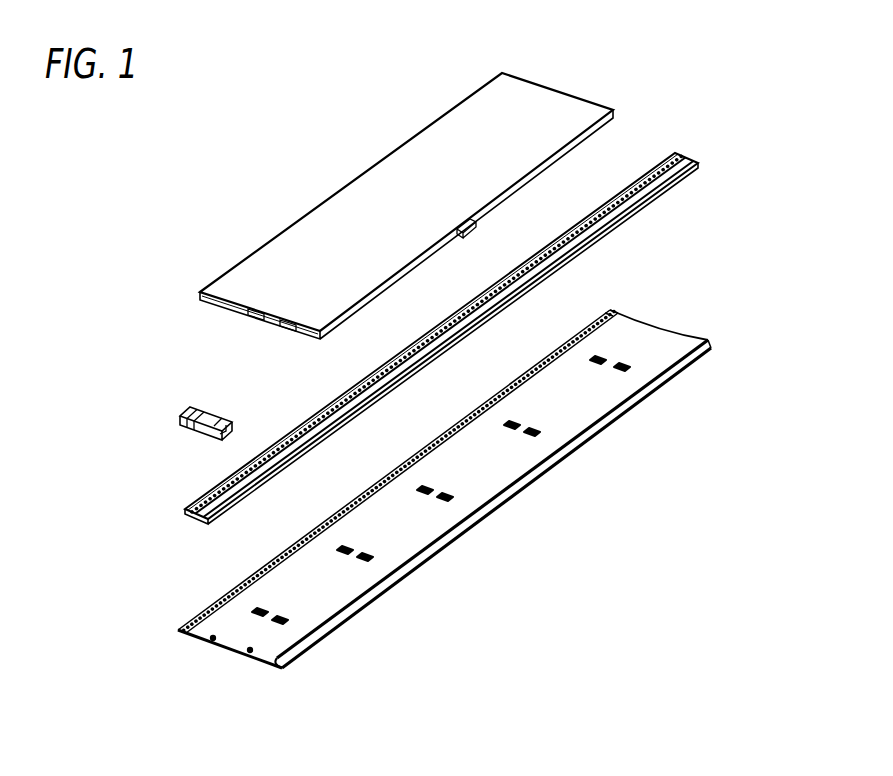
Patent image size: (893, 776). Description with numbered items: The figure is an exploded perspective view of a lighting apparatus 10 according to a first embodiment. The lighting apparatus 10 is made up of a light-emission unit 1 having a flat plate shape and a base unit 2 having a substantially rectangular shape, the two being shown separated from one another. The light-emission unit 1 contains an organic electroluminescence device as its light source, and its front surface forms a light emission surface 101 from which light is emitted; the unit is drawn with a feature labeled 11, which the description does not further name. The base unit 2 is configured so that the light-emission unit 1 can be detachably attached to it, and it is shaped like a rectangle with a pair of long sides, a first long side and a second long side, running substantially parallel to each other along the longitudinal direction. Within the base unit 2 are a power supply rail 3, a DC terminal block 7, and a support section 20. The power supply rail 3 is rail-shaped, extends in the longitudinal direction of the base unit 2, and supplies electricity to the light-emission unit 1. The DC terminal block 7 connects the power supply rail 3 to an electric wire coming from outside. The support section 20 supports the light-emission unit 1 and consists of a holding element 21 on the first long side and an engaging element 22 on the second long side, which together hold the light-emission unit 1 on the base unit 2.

The lighting apparatus 10 is at (668, 103).
The light-emission unit 1 is at (406, 206).
The light emission surface 101 is at (360, 197).
The light guide plate body 11 is at (428, 170).
The power supply rail 3 is at (627, 205).
The DC terminal block 7 is at (182, 410).
The base unit 2 is at (444, 489).
The support section 20 is at (444, 489).
The holding element 21 is at (250, 590).
The engaging element 22 is at (457, 530).